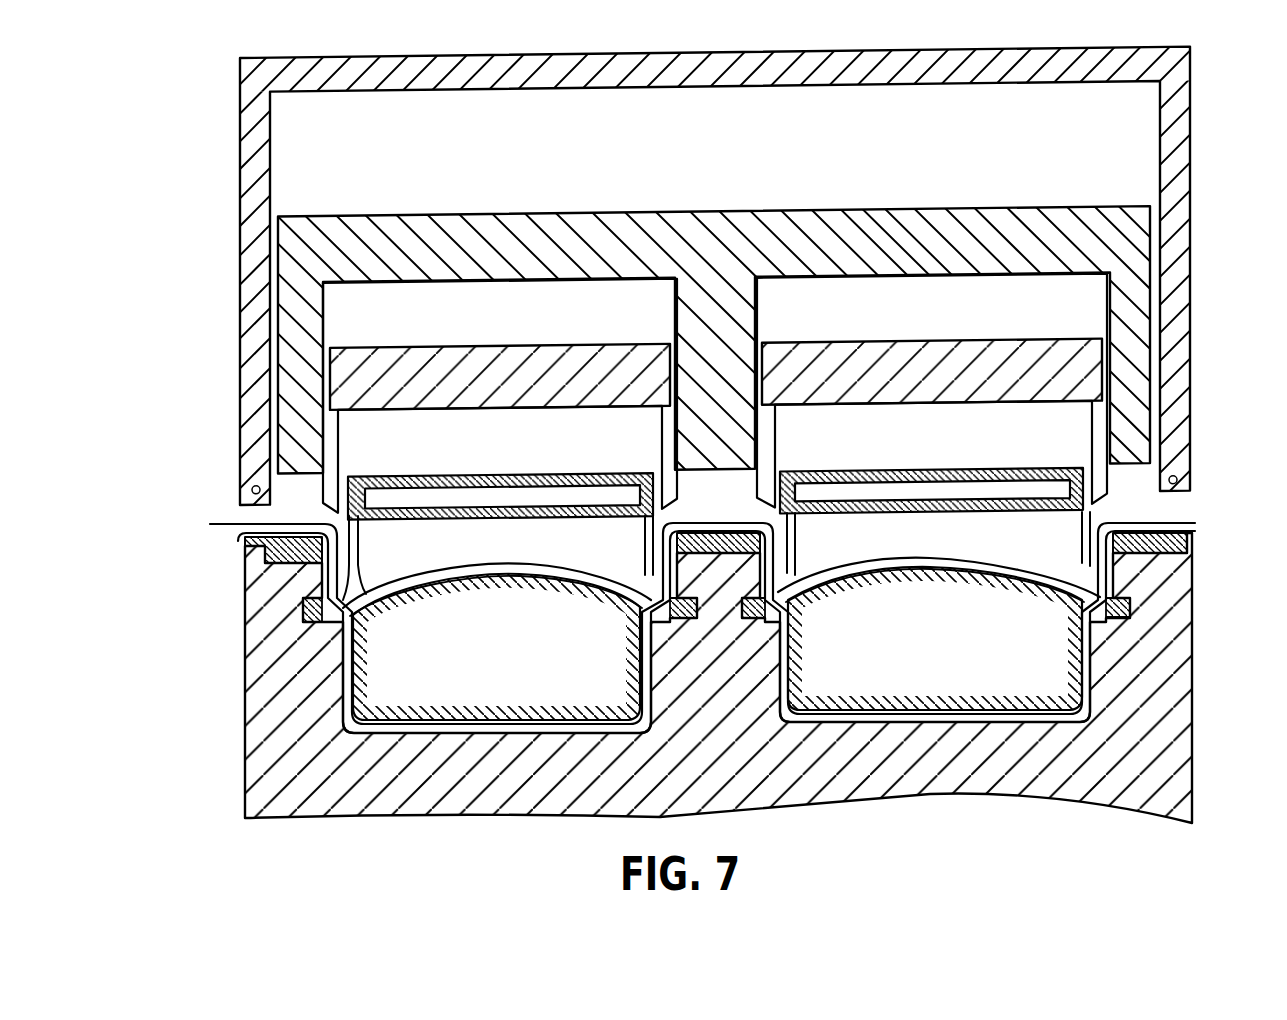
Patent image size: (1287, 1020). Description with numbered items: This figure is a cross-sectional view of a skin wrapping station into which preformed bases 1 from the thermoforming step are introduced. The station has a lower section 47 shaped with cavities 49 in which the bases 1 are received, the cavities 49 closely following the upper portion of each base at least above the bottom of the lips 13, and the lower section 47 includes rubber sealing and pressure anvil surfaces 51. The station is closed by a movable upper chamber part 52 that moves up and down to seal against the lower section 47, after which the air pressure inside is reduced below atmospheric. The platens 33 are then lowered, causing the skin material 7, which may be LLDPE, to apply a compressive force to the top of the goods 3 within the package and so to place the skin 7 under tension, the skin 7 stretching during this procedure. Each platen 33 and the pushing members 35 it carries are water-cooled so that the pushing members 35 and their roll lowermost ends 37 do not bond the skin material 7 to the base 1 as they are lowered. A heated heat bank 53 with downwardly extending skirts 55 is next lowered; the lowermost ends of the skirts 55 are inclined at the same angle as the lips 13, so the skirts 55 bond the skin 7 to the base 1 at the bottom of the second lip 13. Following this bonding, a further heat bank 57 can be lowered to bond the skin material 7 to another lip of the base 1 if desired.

The preformed base 1 is at (577, 732).
The goods 3 is at (414, 663).
The skin material 7 is at (443, 565).
The lip 13 is at (360, 595).
The platen 33 is at (503, 479).
The pushing member 35 is at (647, 540).
The roll lowermost end 37 is at (565, 566).
The lower section 47 is at (262, 697).
The cavity 49 is at (492, 735).
The rubber sealing and pressure anvil surface 51 is at (300, 613).
The movable upper chamber part 52 is at (1192, 168).
The heated heat bank 53 is at (555, 376).
The skirt 55 is at (337, 461).
The further heat bank 57 is at (950, 222).